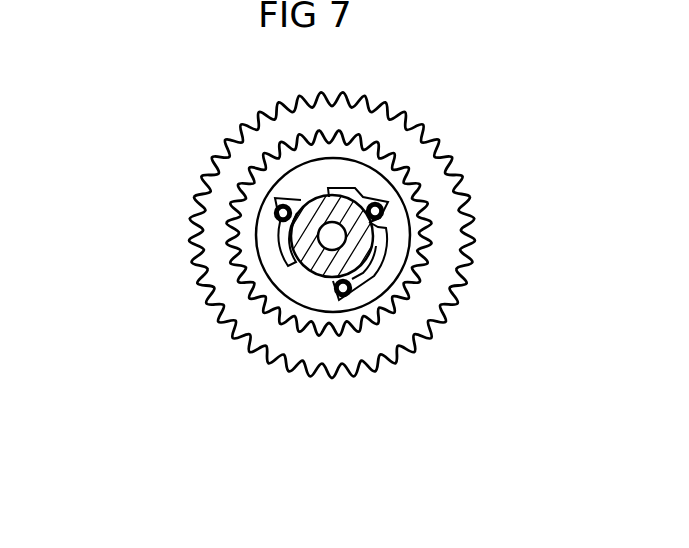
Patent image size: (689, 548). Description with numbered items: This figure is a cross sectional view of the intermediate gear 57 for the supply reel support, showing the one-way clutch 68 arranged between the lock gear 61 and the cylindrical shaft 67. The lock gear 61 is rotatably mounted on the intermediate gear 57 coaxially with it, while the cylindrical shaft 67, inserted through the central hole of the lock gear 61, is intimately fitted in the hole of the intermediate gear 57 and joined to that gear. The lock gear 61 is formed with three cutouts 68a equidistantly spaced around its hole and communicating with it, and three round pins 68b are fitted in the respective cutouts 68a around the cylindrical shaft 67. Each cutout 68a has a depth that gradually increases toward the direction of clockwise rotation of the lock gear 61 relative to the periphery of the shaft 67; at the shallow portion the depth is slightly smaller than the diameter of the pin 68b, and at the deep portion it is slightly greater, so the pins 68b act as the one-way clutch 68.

The intermediate gear 57 is at (470, 213).
The lock gear 61 is at (233, 258).
The cylindrical shaft 67 is at (313, 207).
The one-way clutch 68 is at (266, 329).
The cutouts 68a is at (353, 188).
The round pins 68b is at (337, 298).